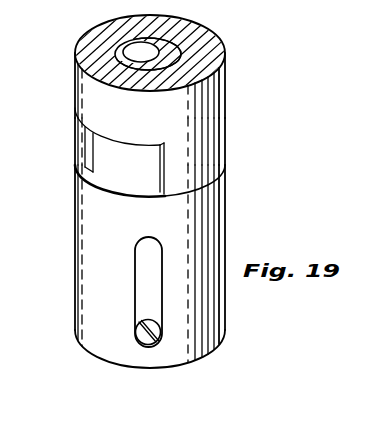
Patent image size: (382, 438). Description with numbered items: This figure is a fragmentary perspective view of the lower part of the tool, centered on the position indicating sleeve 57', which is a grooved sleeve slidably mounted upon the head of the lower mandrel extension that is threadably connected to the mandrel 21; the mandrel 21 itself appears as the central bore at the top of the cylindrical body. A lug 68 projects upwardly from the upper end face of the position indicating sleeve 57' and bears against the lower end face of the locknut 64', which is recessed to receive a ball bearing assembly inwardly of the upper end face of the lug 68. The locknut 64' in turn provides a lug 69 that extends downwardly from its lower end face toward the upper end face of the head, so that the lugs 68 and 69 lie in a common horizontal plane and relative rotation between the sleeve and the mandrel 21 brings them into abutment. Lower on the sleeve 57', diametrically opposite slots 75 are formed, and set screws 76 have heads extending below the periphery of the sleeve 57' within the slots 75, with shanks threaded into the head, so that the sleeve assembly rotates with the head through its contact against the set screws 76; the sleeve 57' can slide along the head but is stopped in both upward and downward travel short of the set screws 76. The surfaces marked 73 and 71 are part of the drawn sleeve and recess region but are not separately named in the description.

The mandrel 21 is at (205, 34).
The locknut 64' is at (181, 63).
The side wall 73 is at (222, 134).
The lug 69 is at (207, 183).
The lug 68 is at (75, 150).
The recess end wall 71 is at (159, 169).
The position indicating sleeve 57' is at (120, 266).
The slots 75 is at (146, 281).
The set screws 76 is at (137, 311).